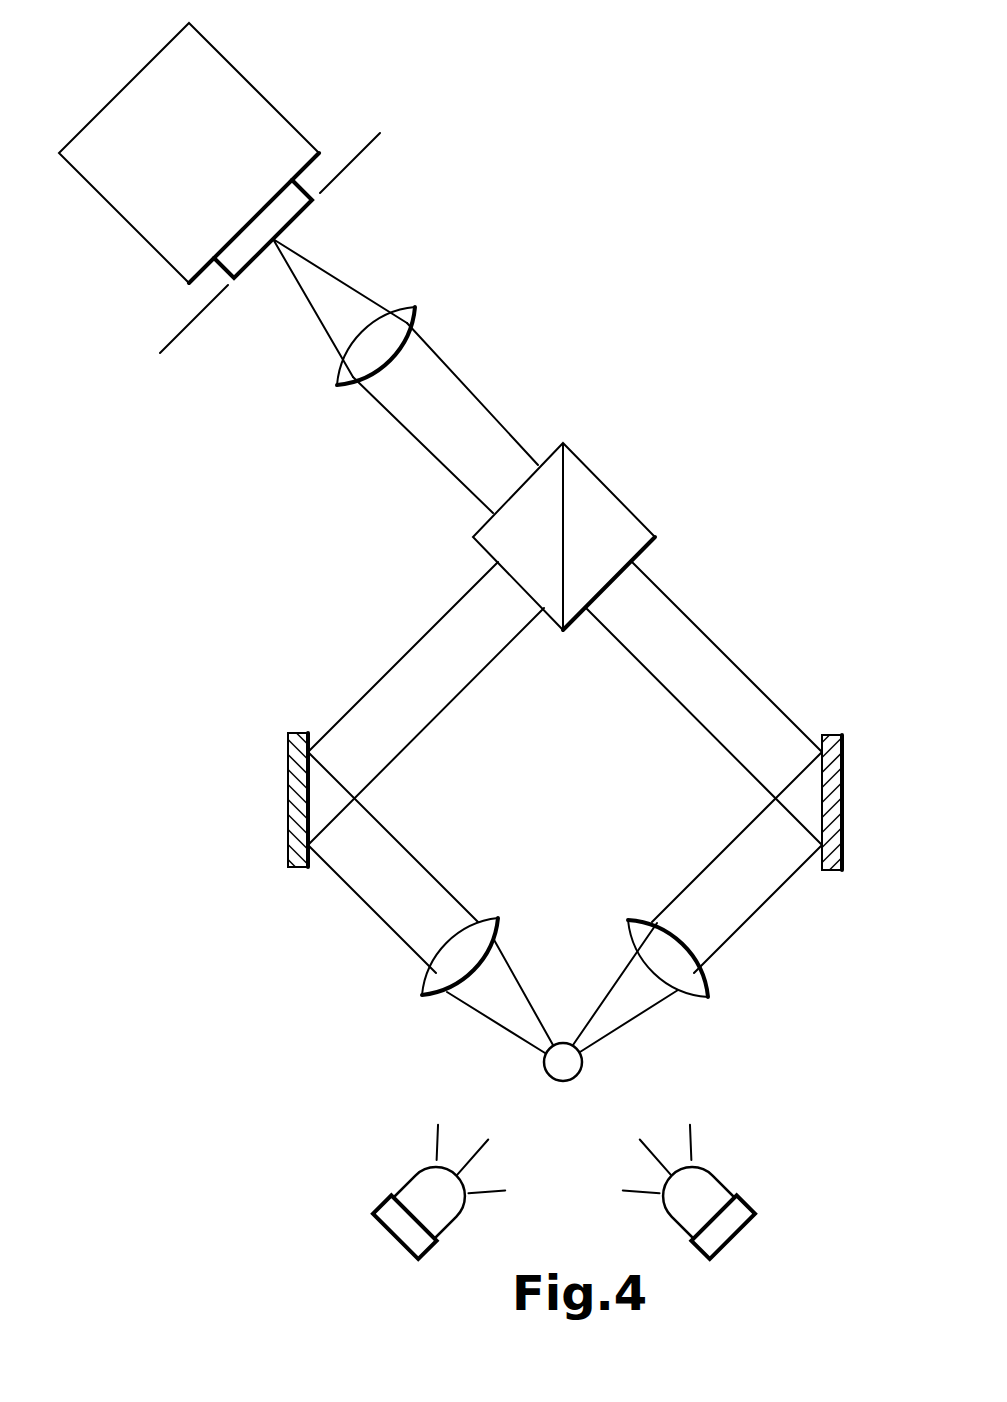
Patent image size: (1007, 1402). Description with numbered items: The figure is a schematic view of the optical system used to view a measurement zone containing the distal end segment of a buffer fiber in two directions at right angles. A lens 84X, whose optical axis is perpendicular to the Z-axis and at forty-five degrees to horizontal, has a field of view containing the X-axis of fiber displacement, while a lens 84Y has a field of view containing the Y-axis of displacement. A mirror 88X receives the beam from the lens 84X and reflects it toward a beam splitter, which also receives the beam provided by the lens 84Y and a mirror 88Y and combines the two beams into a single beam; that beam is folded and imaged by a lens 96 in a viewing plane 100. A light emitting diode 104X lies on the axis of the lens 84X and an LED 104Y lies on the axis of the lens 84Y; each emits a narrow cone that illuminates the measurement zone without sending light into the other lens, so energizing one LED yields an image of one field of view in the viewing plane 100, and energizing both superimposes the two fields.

The viewing plane 100 is at (357, 153).
The lens 96 is at (410, 308).
The mirror 88X is at (290, 808).
The mirror 88Y is at (842, 807).
The lens 84X is at (440, 997).
The lens 84Y is at (692, 997).
The light emitting diode 104Y is at (413, 1180).
The light emitting diode 104X is at (713, 1182).